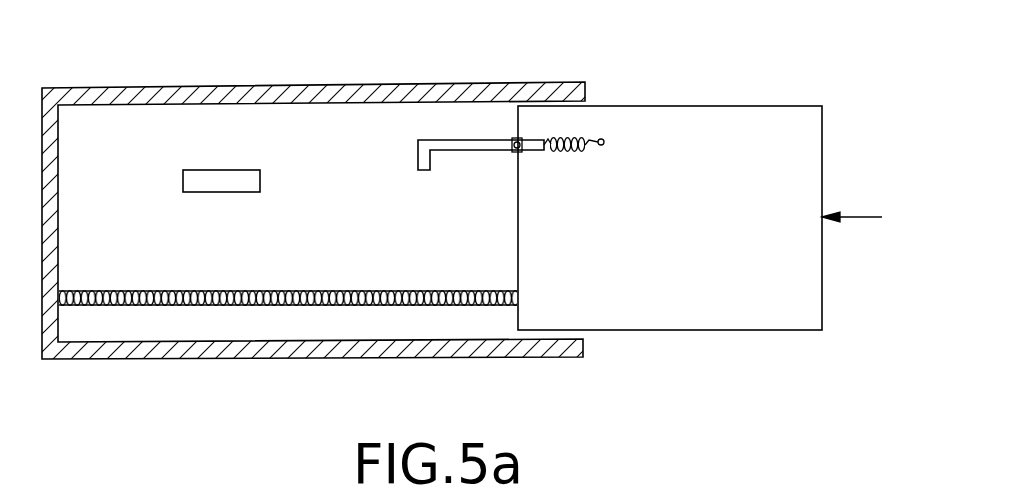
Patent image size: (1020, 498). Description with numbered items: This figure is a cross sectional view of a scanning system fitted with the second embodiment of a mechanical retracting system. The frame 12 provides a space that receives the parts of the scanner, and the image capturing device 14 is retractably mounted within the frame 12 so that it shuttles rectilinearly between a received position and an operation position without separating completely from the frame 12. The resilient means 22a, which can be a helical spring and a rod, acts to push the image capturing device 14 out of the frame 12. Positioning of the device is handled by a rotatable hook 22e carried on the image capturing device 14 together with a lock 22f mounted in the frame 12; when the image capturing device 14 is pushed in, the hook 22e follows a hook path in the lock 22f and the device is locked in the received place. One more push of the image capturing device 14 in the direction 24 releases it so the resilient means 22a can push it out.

The frame 12 is at (50, 97).
The image capturing device 14 is at (752, 137).
The resilient means 22a is at (246, 306).
The rotatable hook 22e is at (464, 140).
The lock 22f is at (222, 180).
The direction 24 is at (866, 217).